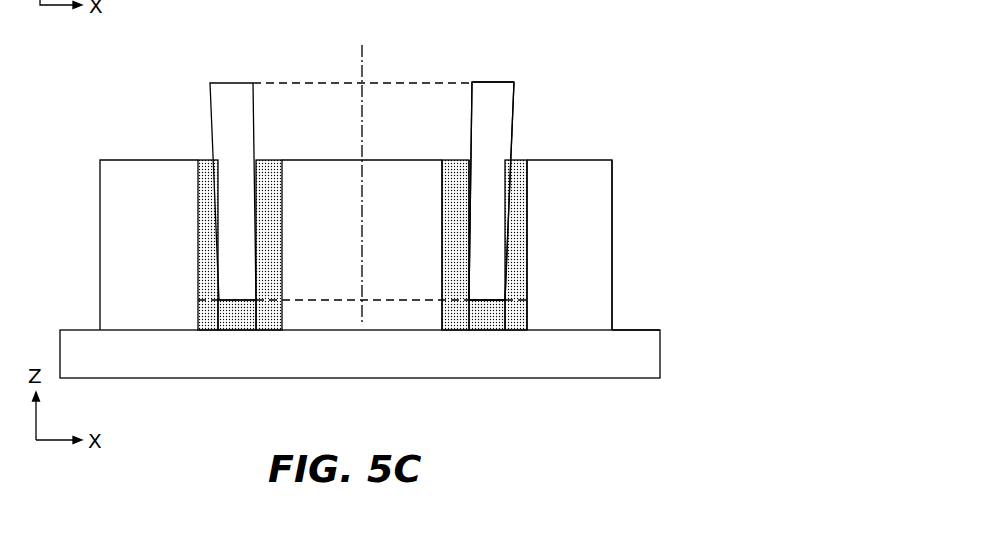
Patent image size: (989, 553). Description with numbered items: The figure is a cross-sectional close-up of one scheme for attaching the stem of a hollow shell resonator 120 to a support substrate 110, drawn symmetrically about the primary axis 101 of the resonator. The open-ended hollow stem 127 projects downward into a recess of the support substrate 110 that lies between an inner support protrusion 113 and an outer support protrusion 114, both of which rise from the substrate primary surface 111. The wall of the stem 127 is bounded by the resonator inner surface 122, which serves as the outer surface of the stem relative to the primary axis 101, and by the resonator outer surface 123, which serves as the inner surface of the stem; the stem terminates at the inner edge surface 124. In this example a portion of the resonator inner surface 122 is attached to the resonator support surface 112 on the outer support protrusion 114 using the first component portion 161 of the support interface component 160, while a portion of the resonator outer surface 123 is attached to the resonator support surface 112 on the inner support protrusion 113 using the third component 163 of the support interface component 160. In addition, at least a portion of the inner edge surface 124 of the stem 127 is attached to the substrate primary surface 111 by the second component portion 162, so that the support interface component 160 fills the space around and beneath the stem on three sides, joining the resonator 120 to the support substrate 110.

The primary axis 101 is at (362, 146).
The support substrate 110 is at (642, 360).
The substrate primary surface 111 is at (633, 329).
The resonator support surface 112 is at (449, 186).
The inner support protrusion 113 is at (337, 283).
The outer support protrusion 114 is at (588, 188).
The hollow shell resonator 120 is at (495, 118).
The resonator inner surface 122 is at (515, 113).
The resonator outer surface 123 is at (468, 139).
The inner edge surface 124 is at (484, 302).
The stem 127 is at (495, 100).
The support interface component 160 is at (527, 228).
The first component portion 161 is at (518, 267).
The second component portion 162 is at (487, 308).
The third component 163 is at (452, 290).